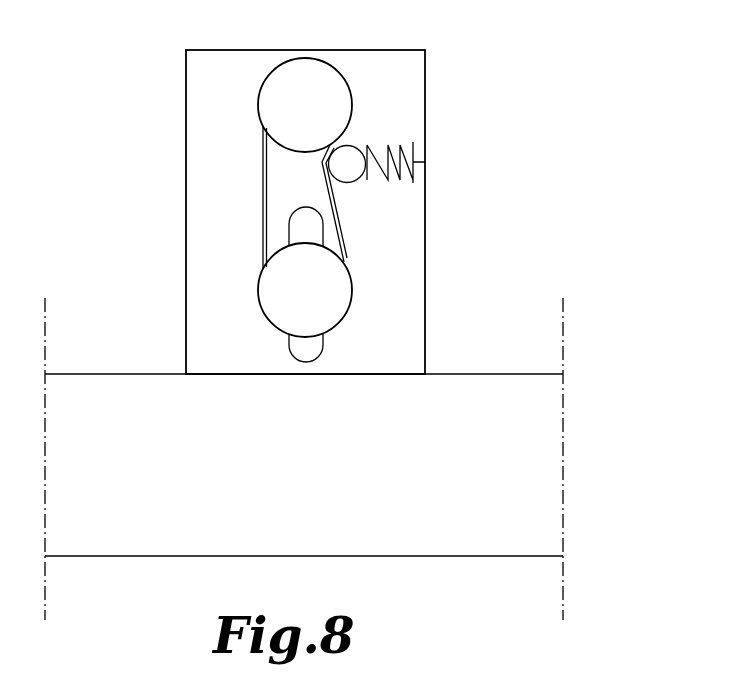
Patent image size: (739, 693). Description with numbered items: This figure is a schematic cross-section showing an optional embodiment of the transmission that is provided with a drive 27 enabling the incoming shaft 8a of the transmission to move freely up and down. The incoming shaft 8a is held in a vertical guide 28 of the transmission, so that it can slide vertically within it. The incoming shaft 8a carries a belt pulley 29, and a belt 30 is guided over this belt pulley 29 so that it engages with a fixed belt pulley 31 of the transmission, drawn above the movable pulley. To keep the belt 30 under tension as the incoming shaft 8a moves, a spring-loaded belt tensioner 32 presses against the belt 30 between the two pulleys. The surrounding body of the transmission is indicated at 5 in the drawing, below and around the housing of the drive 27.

The band 5 is at (540, 462).
The incoming shaft 8a is at (323, 281).
The drive 27 is at (138, 194).
The vertical guide 28 is at (303, 350).
The belt pulley 29 is at (258, 293).
The belt 30 is at (263, 200).
The fixed belt pulley 31 is at (353, 96).
The spring-loaded belt tensioner 32 is at (425, 162).